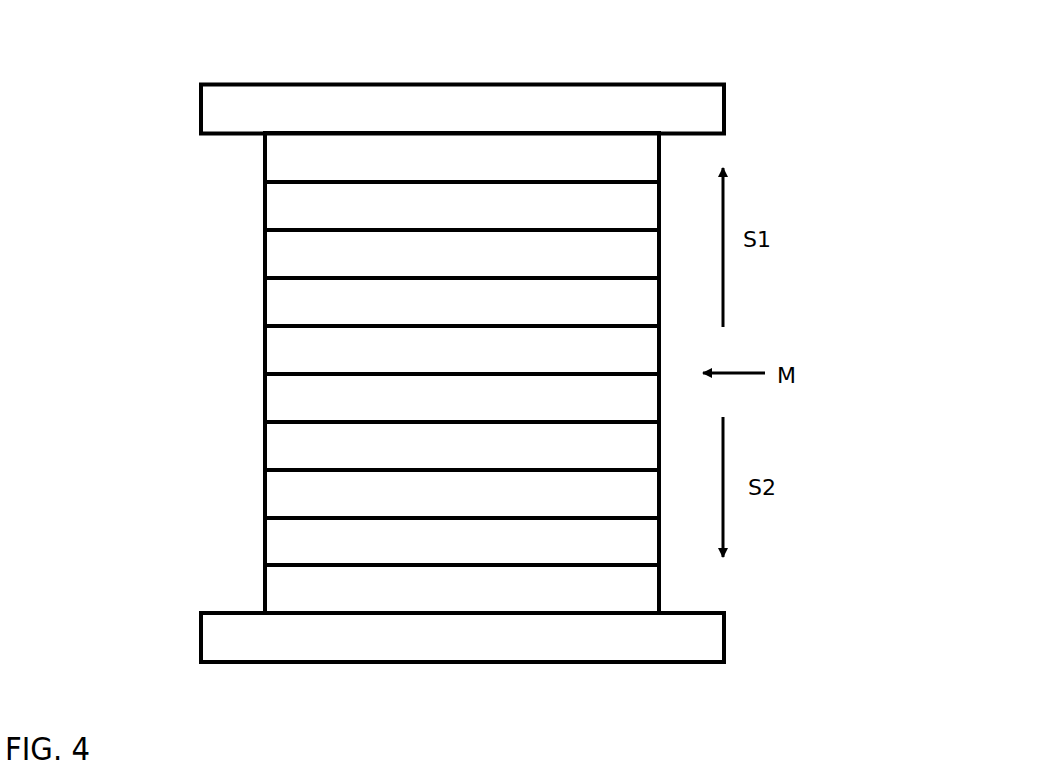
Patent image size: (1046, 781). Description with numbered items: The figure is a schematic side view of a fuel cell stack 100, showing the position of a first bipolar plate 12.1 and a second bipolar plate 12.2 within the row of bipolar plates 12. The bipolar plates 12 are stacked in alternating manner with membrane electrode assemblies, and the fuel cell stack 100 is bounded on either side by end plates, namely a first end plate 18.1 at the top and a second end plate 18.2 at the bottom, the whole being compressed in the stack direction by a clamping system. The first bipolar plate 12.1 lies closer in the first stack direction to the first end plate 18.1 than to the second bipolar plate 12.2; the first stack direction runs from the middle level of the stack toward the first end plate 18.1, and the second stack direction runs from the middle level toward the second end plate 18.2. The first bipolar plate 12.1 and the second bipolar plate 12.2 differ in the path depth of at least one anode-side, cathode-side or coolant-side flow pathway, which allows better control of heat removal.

The fuel cell stack 100 is at (461, 339).
The first end plate 18.1 is at (726, 105).
The second end plate 18.2 is at (726, 648).
The bipolar plates 12 is at (345, 368).
The first bipolar plate 12.1 is at (263, 212).
The second bipolar plate 12.2 is at (263, 302).